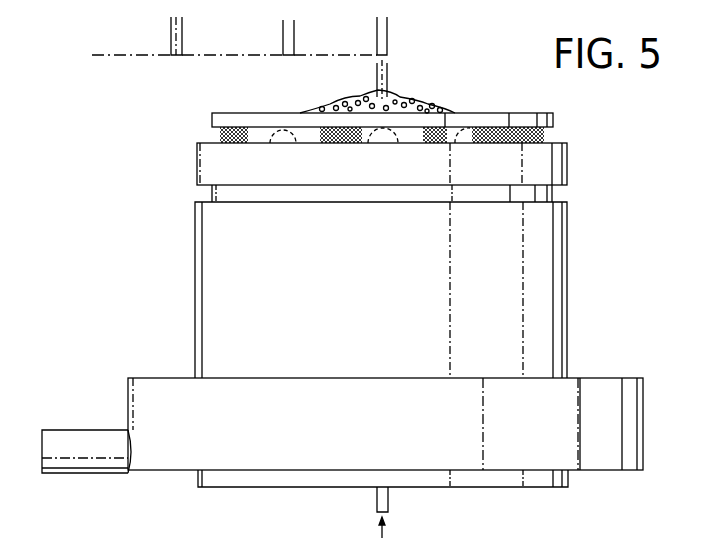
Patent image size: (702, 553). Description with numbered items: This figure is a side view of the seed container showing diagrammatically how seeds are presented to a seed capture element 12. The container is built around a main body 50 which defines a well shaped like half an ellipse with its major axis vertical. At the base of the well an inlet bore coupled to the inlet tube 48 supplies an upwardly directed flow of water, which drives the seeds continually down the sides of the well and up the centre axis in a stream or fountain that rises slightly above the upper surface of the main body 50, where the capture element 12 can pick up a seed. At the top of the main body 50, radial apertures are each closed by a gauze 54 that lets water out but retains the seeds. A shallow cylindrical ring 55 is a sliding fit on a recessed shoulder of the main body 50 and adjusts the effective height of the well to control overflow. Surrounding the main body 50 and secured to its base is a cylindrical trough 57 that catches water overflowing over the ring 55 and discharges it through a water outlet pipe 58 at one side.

The capture element 12 is at (377, 43).
The inlet tube 48 is at (380, 498).
The main body 50 is at (540, 255).
The gauze 54 is at (518, 127).
The cylindrical ring 55 is at (555, 165).
The cylindrical trough 57 is at (178, 390).
The water outlet pipe 58 is at (95, 440).